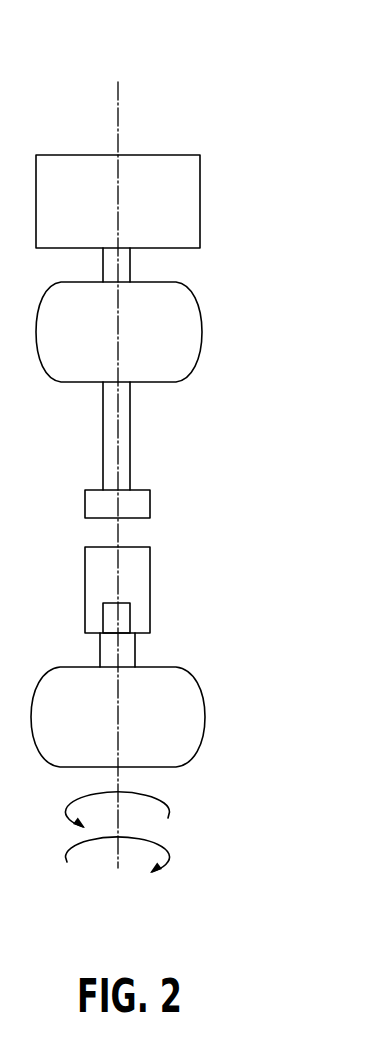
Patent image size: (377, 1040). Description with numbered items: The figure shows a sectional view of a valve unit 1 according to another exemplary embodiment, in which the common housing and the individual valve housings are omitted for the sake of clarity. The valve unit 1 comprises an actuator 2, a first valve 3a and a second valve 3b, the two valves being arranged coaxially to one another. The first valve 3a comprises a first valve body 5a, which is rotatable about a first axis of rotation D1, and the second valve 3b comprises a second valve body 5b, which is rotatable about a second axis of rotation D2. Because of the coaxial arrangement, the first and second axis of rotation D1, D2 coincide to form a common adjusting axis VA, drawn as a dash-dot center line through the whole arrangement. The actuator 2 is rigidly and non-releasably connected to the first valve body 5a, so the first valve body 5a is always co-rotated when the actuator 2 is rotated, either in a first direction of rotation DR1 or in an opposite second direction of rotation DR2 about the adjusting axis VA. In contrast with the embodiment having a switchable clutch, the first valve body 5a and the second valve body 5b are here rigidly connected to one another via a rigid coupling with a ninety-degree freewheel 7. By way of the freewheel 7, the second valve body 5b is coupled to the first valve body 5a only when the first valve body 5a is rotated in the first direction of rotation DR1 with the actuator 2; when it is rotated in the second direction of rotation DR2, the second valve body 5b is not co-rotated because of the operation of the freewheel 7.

The valve unit 1 is at (262, 145).
The actuator 2 is at (182, 202).
The first valve 3a is at (180, 365).
The second valve 3b is at (180, 695).
The first valve body 5a is at (163, 343).
The second valve body 5b is at (162, 729).
The 90° freewheel 7 is at (188, 546).
The first axis of rotation D1 is at (179, 444).
The second axis of rotation D2 is at (179, 444).
The adjusting axis VA is at (120, 112).
The first direction of rotation DR1 is at (172, 853).
The second direction of rotation DR2 is at (170, 810).